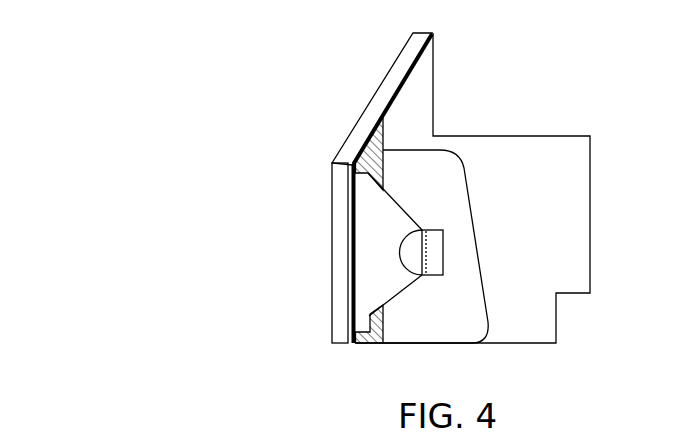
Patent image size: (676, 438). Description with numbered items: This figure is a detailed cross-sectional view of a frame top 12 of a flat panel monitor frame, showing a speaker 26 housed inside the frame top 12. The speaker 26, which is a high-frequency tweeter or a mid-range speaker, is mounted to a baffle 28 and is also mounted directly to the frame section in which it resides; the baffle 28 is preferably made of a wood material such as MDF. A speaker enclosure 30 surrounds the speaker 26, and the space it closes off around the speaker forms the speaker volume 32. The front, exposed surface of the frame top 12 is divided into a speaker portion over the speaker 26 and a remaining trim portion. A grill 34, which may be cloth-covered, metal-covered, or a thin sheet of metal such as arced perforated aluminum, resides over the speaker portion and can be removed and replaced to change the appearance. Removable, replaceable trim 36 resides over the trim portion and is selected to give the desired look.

The frame top 12 is at (192, 147).
The speaker 26 is at (370, 255).
The baffle 28 is at (360, 151).
The speaker enclosure 30 is at (442, 148).
The speaker volume 32 is at (443, 187).
The grill 34 is at (342, 313).
The trim 36 is at (400, 63).